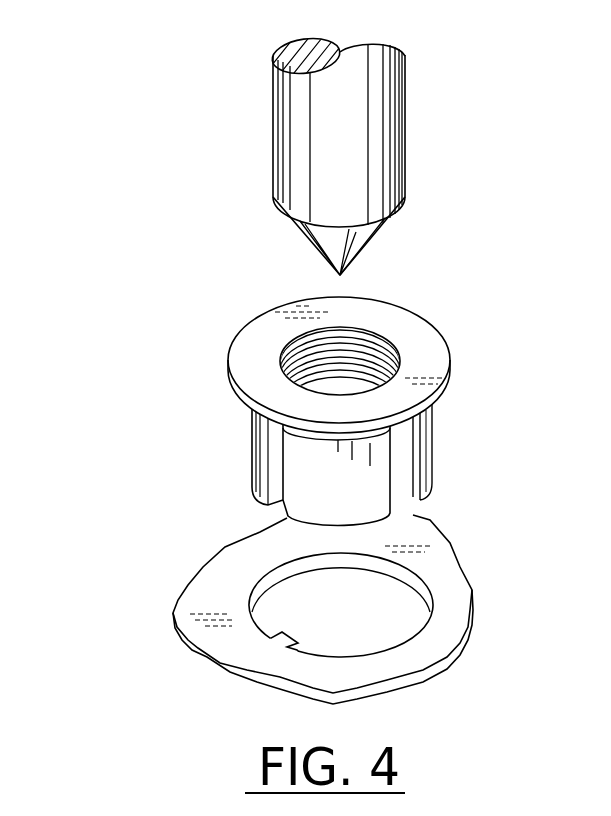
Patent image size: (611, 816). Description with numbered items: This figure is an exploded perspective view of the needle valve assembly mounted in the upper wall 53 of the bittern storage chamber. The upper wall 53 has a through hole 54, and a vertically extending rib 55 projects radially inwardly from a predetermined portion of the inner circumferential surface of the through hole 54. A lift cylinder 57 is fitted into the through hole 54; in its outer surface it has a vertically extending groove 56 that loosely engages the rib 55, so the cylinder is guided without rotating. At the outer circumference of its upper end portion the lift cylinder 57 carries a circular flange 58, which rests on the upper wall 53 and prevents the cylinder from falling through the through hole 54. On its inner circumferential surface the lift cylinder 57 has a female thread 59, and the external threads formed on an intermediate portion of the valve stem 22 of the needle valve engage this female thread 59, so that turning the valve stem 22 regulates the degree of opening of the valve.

The valve stem 22 is at (390, 124).
The upper wall 53 is at (453, 627).
The through hole 54 is at (380, 590).
The rib 55 is at (281, 632).
The groove 56 is at (270, 468).
The lift cylinder 57 is at (420, 457).
The circular flange 58 is at (427, 348).
The female thread 59 is at (352, 325).